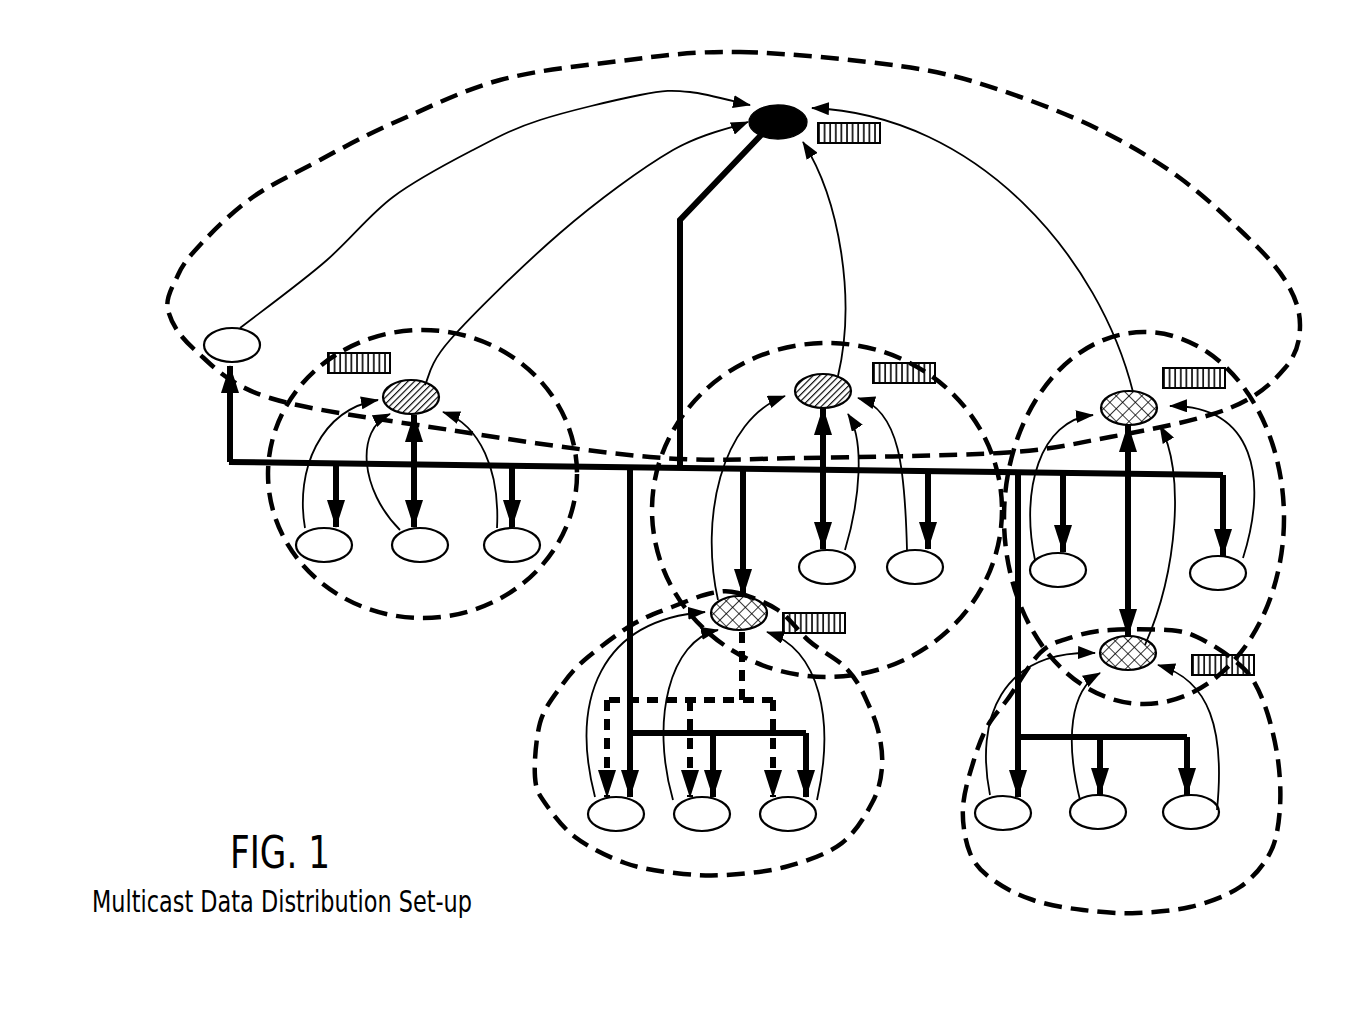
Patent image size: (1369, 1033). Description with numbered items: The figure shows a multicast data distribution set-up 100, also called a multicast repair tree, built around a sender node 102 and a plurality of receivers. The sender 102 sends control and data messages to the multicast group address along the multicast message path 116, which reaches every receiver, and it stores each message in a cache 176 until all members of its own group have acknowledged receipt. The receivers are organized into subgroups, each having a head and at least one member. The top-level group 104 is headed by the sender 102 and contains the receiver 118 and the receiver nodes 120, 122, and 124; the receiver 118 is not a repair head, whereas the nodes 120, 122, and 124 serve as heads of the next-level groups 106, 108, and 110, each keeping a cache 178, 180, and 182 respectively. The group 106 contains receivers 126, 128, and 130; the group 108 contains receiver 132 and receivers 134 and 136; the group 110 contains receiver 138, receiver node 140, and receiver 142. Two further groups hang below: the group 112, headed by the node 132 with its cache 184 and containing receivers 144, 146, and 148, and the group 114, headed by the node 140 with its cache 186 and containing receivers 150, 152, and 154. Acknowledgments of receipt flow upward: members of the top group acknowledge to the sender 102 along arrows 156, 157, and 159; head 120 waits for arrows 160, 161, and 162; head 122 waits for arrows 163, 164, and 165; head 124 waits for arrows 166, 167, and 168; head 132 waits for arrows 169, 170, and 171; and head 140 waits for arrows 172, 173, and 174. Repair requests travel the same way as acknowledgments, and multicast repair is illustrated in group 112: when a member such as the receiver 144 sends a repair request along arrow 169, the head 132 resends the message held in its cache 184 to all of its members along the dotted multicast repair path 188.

The multicast data distribution set-up 100 is at (205, 92).
The sender node 102 is at (812, 88).
The group 104 is at (250, 192).
The group 106 is at (520, 374).
The group 108 is at (955, 410).
The group 110 is at (1160, 326).
The group 112 is at (537, 716).
The group 114 is at (987, 729).
The multicast message path 116 is at (690, 220).
The receiver 118 is at (235, 327).
The receiver node / head 120 is at (441, 400).
The receiver node / head 122 is at (815, 372).
The receiver node / head 124 is at (1110, 395).
The receiver 126 is at (314, 566).
The receiver 128 is at (424, 565).
The receiver 130 is at (507, 564).
The receiver node / head 132 is at (706, 598).
The receiver 134 is at (835, 587).
The receiver 136 is at (920, 587).
The receiver 138 is at (1053, 592).
The receiver node / head 140 is at (1112, 640).
The receiver 142 is at (1210, 592).
The receiver 144 is at (606, 835).
The receiver 146 is at (700, 835).
The receiver 148 is at (790, 835).
The receiver 150 is at (990, 832).
The receiver 152 is at (1095, 834).
The receiver 154 is at (1190, 834).
The acknowledgment of receipt arrow 156 is at (398, 197).
The acknowledgment of receipt arrow 157 is at (560, 235).
The acknowledgment of receipt arrow 159 is at (840, 245).
The acknowledgment of receipt arrow 160 is at (262, 495).
The acknowledgment of receipt arrow 161 is at (388, 536).
The acknowledgment of receipt arrow 162 is at (470, 497).
The acknowledgment of receipt arrow 163 is at (706, 492).
The acknowledgment of receipt arrow 164 is at (815, 495).
The acknowledgment of receipt arrow 165 is at (905, 508).
The acknowledgment of receipt arrow 166 is at (1068, 521).
The acknowledgment of receipt arrow 167 is at (1132, 508).
The acknowledgment of receipt arrow 168 is at (1258, 478).
The acknowledgment / repair request arrow 169 is at (575, 740).
The acknowledgment of receipt arrow 170 is at (672, 655).
The acknowledgment of receipt arrow 171 is at (830, 748).
The acknowledgment of receipt arrow 172 is at (985, 770).
The acknowledgment of receipt arrow 173 is at (1068, 760).
The acknowledgment of receipt arrow 174 is at (1215, 740).
The cache 176 is at (848, 144).
The cache 178 is at (345, 352).
The cache 180 is at (920, 363).
The cache 182 is at (1210, 366).
The cache 184 is at (850, 633).
The cache 186 is at (1230, 656).
The multicast repair path 188 is at (605, 693).